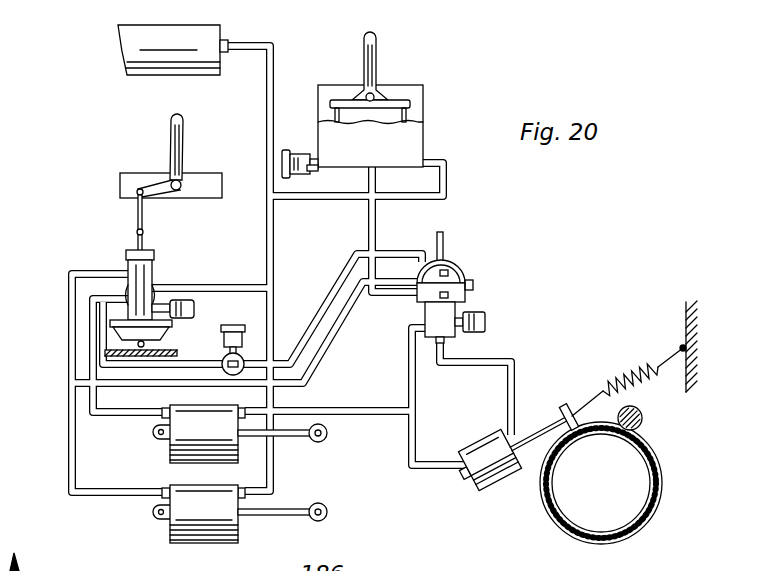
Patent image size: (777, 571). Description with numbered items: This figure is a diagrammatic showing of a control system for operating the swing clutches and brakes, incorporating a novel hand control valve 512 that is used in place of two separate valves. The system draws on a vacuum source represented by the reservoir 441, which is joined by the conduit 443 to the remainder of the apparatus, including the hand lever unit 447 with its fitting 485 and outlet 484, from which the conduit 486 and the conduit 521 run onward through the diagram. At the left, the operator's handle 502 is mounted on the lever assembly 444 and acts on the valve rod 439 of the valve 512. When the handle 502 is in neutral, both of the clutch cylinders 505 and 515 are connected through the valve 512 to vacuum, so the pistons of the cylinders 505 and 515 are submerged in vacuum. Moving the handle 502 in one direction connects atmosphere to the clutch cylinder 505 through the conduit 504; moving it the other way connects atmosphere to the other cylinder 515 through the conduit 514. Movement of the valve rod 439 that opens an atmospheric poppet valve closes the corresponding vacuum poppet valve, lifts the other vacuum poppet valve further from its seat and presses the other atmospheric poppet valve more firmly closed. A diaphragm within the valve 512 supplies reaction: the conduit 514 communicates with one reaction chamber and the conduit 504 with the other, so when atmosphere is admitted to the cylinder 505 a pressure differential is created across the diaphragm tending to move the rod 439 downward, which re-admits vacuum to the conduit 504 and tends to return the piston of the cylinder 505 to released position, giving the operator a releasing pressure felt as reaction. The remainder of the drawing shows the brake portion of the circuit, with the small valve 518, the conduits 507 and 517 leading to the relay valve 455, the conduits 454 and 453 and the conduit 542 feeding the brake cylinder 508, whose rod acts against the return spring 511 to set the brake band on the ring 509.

The reservoir tank 441 is at (197, 20).
The conduit 443 is at (274, 52).
The hand lever control valve 447 is at (382, 75).
The valve fitting 485 is at (300, 152).
The outlet fitting 484 is at (311, 168).
The conduit 486 is at (447, 190).
The conduit 521 is at (380, 205).
The handle 502 is at (176, 122).
The control lever assembly 444 is at (160, 178).
The valve rod 439 is at (136, 238).
The valve 512 is at (138, 278).
The conduit 514 is at (68, 312).
The conduit 504 is at (95, 414).
The check valve 518 is at (224, 357).
The conduit 507 is at (340, 297).
The conduit 517 is at (334, 325).
The conduit 454 is at (409, 374).
The relay valve 455 is at (466, 296).
The conduit 542 is at (488, 360).
The conduit 453 is at (409, 441).
The brake cylinder 508 is at (474, 488).
The brake band ring 509 is at (548, 502).
The return spring 511 is at (620, 375).
The clutch cylinder 505 is at (180, 440).
The clutch cylinder 515 is at (180, 512).